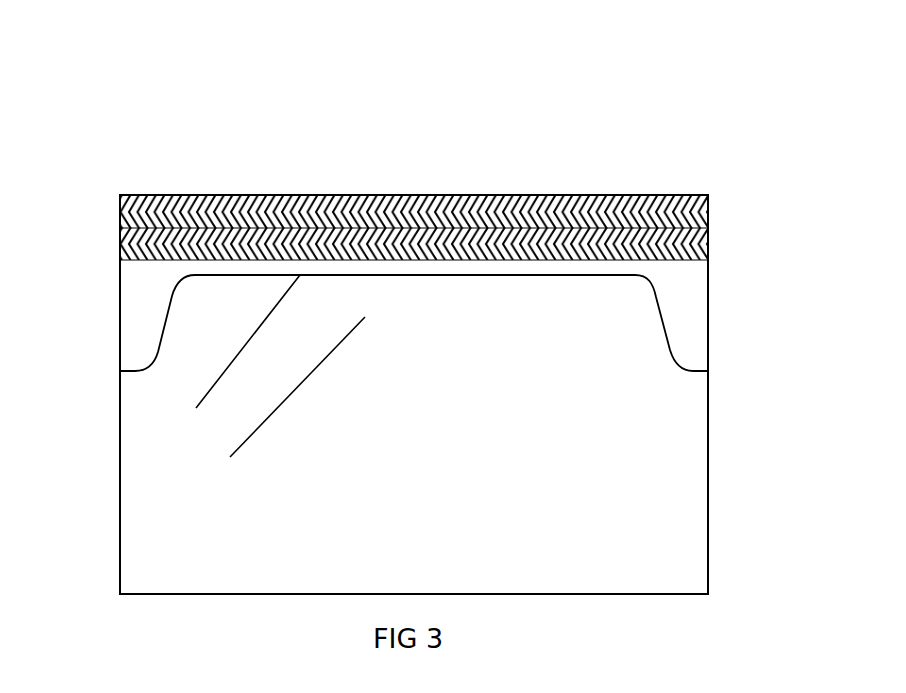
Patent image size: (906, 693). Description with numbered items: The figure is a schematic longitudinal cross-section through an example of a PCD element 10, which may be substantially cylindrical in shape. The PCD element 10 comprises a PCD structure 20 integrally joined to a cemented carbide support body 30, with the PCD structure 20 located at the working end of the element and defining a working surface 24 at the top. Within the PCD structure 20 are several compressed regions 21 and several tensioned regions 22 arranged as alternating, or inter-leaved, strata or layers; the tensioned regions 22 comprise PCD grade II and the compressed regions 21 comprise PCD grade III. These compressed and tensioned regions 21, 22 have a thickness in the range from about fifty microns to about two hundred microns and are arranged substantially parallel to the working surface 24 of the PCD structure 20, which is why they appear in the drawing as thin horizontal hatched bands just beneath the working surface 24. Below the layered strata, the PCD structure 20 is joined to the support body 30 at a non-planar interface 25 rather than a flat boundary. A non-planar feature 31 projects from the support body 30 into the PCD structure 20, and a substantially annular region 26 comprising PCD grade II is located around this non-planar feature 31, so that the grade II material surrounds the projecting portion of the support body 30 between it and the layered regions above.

The PCD element 10 is at (183, 74).
The PCD structure 20 is at (317, 195).
The compressed regions 21 is at (708, 201).
The tensioned regions 22 is at (120, 217).
The working surface 24 is at (566, 176).
The non-planar interface 25 is at (196, 408).
The annular region 26 is at (132, 313).
The cemented carbide support body 30 is at (140, 515).
The non-planar feature 31 is at (230, 457).